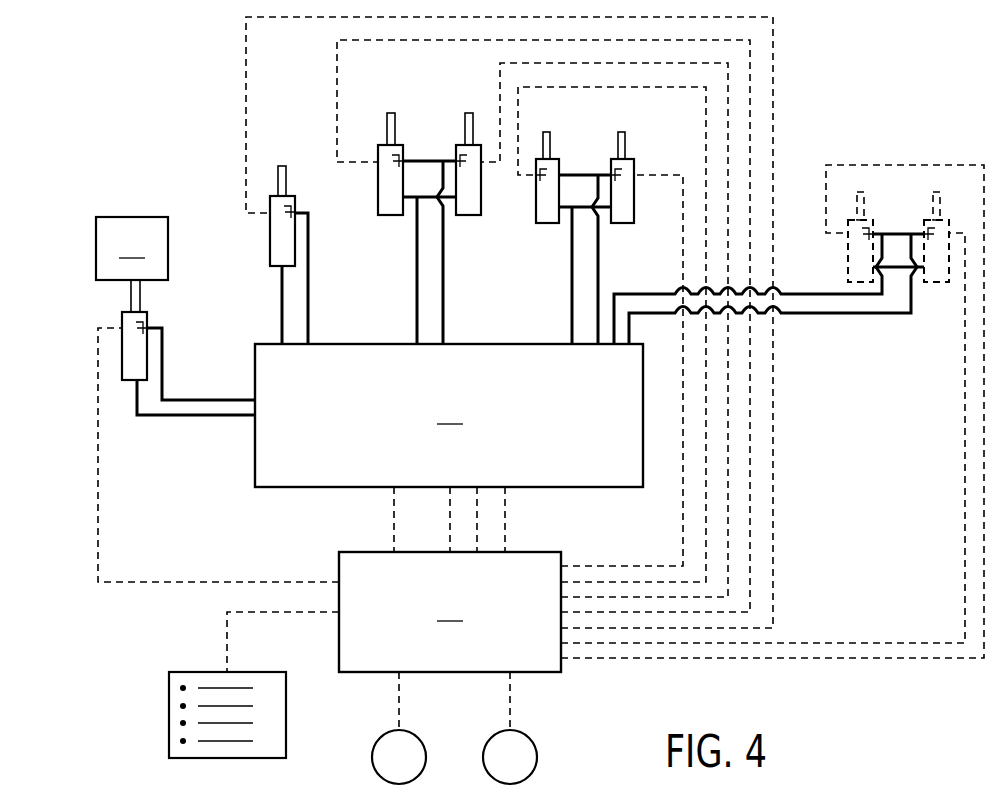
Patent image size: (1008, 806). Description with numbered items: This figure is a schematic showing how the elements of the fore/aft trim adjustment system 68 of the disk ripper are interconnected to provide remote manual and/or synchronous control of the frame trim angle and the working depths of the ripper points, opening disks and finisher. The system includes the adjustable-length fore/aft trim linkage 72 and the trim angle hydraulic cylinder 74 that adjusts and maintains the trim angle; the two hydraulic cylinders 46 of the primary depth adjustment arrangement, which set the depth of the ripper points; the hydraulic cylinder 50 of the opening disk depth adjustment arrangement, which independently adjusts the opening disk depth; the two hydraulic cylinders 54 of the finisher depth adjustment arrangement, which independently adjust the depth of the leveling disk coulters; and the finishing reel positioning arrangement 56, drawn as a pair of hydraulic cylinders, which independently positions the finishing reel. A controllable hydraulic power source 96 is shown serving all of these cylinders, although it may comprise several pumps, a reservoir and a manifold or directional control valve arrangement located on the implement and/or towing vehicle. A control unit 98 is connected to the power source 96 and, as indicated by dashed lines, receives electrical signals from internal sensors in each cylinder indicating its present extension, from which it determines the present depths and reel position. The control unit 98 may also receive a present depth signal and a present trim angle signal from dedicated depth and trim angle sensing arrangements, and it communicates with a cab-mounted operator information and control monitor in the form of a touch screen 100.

The hydraulic cylinders 46 is at (456, 158).
The hydraulic cylinder 50 is at (270, 242).
The hydraulic cylinders 54 is at (540, 190).
The finishing reel positioning arrangement 56 is at (924, 232).
The fore/aft trim adjustment system 68 is at (818, 86).
The fore/aft trim linkage 72 is at (132, 264).
The trim angle hydraulic cylinder 74 is at (133, 350).
The hydraulic power source 96 is at (449, 448).
The control unit 98 is at (541, 412).
The touch screen 100 is at (169, 716).